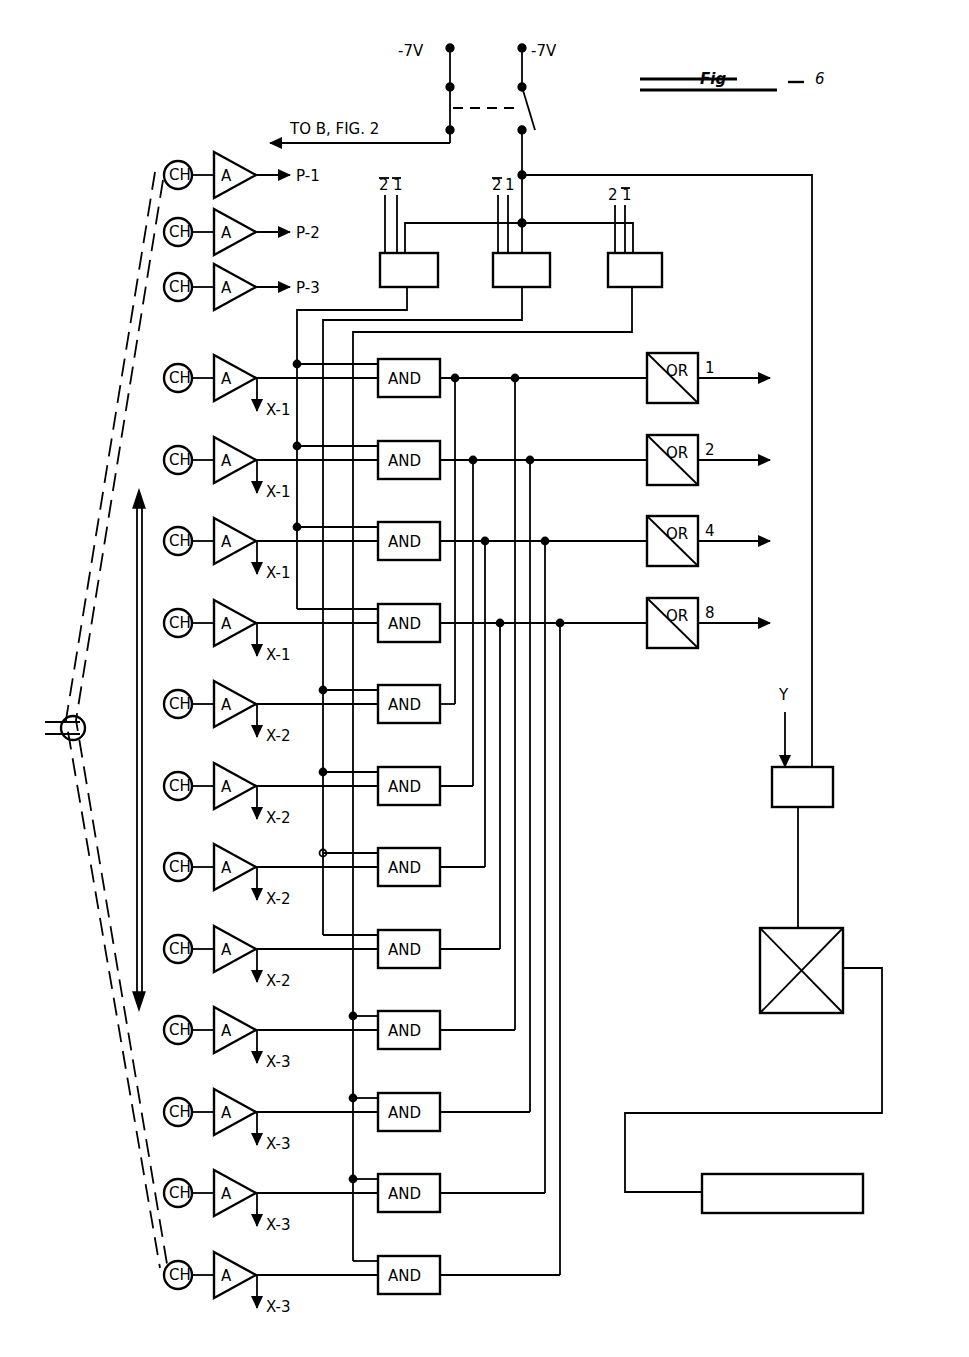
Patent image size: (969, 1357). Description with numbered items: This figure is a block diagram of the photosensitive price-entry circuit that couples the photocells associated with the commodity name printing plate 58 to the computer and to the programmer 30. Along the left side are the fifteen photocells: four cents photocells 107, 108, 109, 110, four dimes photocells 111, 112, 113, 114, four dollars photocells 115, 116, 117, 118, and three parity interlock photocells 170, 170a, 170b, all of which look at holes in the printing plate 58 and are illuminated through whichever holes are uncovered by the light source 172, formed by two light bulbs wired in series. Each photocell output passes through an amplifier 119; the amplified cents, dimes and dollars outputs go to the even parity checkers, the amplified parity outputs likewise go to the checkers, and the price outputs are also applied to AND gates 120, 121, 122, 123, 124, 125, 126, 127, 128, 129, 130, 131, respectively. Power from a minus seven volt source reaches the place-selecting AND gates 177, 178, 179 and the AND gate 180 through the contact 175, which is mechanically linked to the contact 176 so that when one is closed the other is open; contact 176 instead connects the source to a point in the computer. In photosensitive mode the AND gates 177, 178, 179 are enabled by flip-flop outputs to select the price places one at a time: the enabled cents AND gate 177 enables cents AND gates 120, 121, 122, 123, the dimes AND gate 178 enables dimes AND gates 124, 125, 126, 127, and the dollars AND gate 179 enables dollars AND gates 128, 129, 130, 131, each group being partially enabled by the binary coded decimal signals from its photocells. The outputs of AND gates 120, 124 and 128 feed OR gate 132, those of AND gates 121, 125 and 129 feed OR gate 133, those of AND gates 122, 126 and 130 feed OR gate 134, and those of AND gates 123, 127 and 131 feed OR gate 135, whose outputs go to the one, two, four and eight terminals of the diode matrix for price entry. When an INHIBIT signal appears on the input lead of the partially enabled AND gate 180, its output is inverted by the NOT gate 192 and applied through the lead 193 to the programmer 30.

The programmer 30 is at (782, 1180).
The commodity name printing plate 58 is at (121, 750).
The cents photocell 107 is at (176, 398).
The cents photocell 108 is at (176, 480).
The cents photocell 109 is at (176, 561).
The cents photocell 110 is at (176, 643).
The dimes photocell 111 is at (176, 724).
The dimes photocell 112 is at (176, 806).
The dimes photocell 113 is at (176, 887).
The dimes photocell 114 is at (176, 969).
The dollars photocell 115 is at (176, 1050).
The dollars photocell 116 is at (176, 1132).
The dollars photocell 117 is at (176, 1213).
The dollars photocell 118 is at (176, 1295).
The amplifier 119 is at (250, 825).
The cents AND gate 120 is at (418, 367).
The cents AND gate 121 is at (418, 449).
The cents AND gate 122 is at (418, 530).
The cents AND gate 123 is at (418, 612).
The dimes AND gate 124 is at (418, 693).
The dimes AND gate 125 is at (418, 775).
The dimes AND gate 126 is at (418, 856).
The dimes AND gate 127 is at (418, 938).
The dollars AND gate 128 is at (418, 1019).
The dollars AND gate 129 is at (418, 1101).
The dollars AND gate 130 is at (418, 1182).
The dollars AND gate 131 is at (418, 1264).
The OR gate 132 is at (643, 377).
The OR gate 133 is at (643, 459).
The OR gate 134 is at (643, 540).
The OR gate 135 is at (643, 622).
The parity interlock photocell 170 is at (165, 167).
The parity interlock photocell 170a is at (165, 231).
The parity interlock photocell 170b is at (175, 301).
The light source 172 is at (82, 742).
The contact 175 is at (532, 113).
The contact 176 is at (448, 110).
The cents AND gate 177 is at (438, 278).
The dimes AND gate 178 is at (550, 278).
The dollars AND gate 179 is at (662, 278).
The AND gate 180 is at (774, 787).
The NOT gate 192 is at (770, 970).
The lead 193 is at (753, 1080).